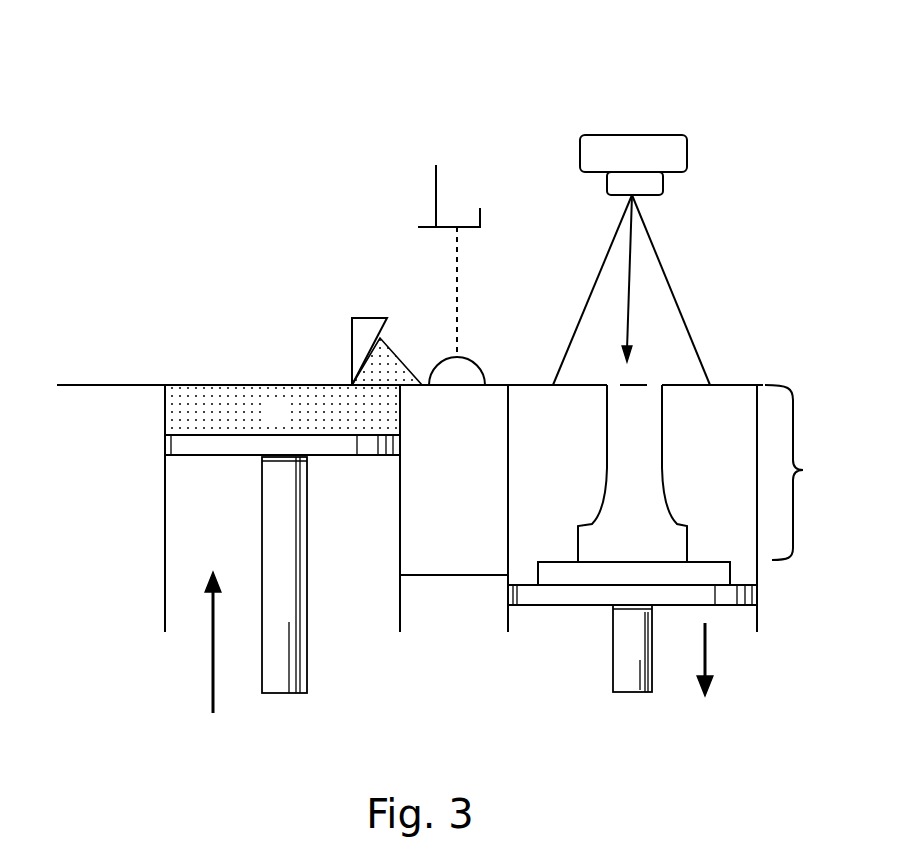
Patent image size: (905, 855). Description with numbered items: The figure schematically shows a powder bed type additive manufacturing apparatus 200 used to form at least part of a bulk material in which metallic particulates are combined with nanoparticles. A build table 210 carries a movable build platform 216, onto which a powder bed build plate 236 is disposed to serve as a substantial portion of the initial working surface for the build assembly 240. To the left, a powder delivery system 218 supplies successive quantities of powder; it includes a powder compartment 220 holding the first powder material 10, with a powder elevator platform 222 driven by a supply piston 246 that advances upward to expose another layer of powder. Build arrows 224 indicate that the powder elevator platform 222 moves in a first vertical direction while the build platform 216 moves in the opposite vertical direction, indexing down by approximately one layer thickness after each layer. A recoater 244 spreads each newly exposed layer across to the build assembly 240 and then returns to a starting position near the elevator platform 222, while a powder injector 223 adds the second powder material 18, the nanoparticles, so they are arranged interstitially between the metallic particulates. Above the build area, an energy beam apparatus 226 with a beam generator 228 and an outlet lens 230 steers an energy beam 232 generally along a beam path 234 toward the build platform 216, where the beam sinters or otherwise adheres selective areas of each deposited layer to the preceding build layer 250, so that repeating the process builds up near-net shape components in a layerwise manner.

The additive manufacturing apparatus 200 is at (122, 260).
The build table 210 is at (113, 378).
The powder delivery system 218 is at (268, 272).
The powder compartment 220 is at (165, 407).
The first powder material 10 is at (286, 423).
The powder elevator platform 222 is at (366, 457).
The supply piston 246 is at (280, 604).
The build arrows 224 is at (210, 662).
The recoater 244 is at (370, 312).
The powder injector 223 is at (418, 227).
The second powder material 18 is at (457, 258).
The energy beam apparatus 226 is at (632, 199).
The beam generator 228 is at (632, 150).
The outlet lens 230 is at (612, 186).
The energy beam 232 is at (622, 307).
The beam path 234 is at (665, 268).
The preceding build layer 250 is at (657, 383).
The powder bed build plate 236 is at (730, 572).
The movable build platform 216 is at (731, 630).
The build assembly 240 is at (803, 470).